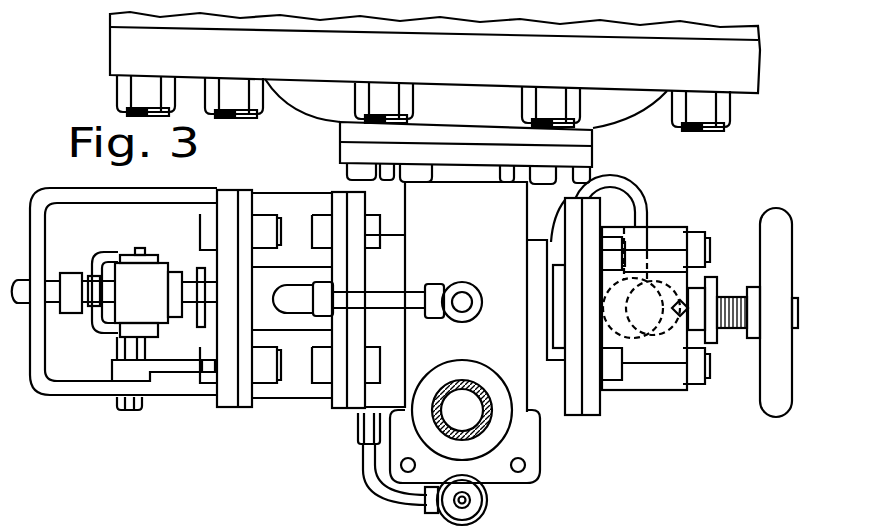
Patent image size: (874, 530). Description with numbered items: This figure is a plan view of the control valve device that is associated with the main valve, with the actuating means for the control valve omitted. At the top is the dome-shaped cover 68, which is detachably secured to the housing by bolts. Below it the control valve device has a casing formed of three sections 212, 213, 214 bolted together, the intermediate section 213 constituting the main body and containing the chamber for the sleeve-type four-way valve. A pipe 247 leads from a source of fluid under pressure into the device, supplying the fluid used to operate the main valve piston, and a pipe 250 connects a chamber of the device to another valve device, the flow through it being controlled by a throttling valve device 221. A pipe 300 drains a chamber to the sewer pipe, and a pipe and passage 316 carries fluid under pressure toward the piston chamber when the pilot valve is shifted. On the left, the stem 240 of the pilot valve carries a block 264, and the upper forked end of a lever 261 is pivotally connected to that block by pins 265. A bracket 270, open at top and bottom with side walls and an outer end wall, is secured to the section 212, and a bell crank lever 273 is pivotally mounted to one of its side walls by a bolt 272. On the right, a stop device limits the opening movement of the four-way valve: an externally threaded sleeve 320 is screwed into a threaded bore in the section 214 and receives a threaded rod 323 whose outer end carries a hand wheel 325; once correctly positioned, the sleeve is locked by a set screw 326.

The cover 68 is at (466, 138).
The casing section 212 is at (292, 248).
The intermediate casing section 213 is at (477, 332).
The casing section 214 is at (660, 232).
The throttling valve device 221 is at (488, 501).
The stem 240 is at (52, 288).
The pipe 247 is at (462, 386).
The pipe 250 is at (366, 466).
The lever 261 is at (103, 258).
The block 264 is at (166, 300).
The pins 265 is at (137, 256).
The bracket 270 is at (67, 389).
The bolt 272 is at (131, 409).
The bell crank lever 273 is at (170, 368).
The pipe 300 is at (609, 190).
The pipe and passage 316 is at (408, 300).
The sleeve 320 is at (710, 280).
The threaded rod 323 is at (733, 330).
The hand wheel 325 is at (775, 216).
The set screw 326 is at (682, 315).